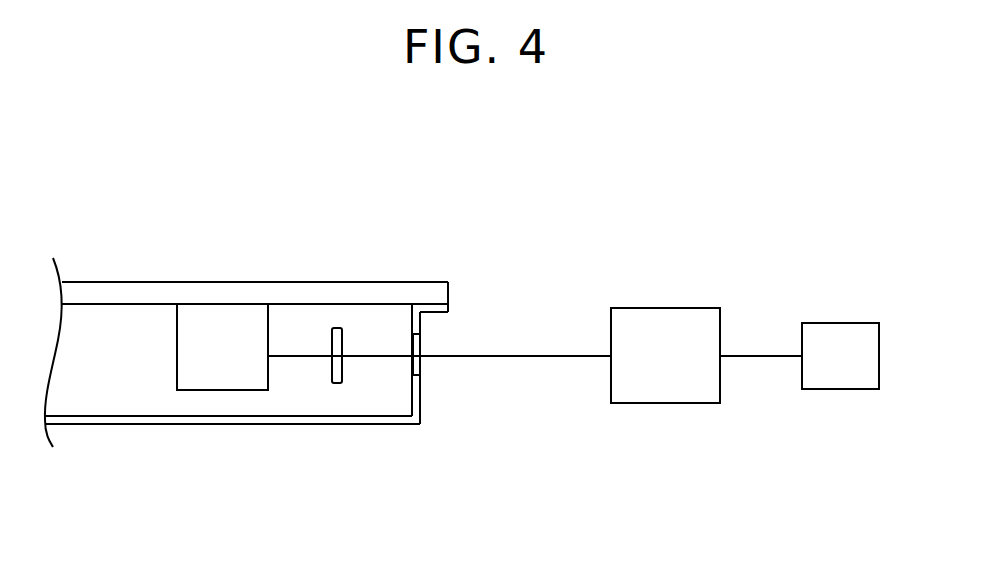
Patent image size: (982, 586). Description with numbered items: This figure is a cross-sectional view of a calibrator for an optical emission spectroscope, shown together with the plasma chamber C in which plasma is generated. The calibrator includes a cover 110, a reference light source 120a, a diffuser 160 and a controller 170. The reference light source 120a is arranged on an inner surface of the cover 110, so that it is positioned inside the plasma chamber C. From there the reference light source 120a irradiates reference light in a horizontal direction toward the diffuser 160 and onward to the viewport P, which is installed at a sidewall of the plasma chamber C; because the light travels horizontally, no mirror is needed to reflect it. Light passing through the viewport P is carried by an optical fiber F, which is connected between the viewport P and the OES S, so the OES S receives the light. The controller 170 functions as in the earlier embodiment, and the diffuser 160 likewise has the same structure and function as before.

The cover 110 is at (449, 287).
The reference light source 120a is at (213, 377).
The diffuser 160 is at (332, 385).
The controller 170 is at (837, 389).
The plasma chamber C is at (163, 424).
The viewport P is at (421, 366).
The optical fiber F is at (550, 356).
The OES S is at (663, 403).